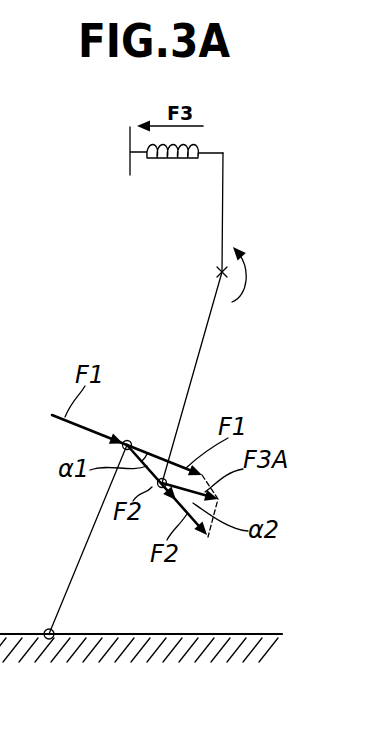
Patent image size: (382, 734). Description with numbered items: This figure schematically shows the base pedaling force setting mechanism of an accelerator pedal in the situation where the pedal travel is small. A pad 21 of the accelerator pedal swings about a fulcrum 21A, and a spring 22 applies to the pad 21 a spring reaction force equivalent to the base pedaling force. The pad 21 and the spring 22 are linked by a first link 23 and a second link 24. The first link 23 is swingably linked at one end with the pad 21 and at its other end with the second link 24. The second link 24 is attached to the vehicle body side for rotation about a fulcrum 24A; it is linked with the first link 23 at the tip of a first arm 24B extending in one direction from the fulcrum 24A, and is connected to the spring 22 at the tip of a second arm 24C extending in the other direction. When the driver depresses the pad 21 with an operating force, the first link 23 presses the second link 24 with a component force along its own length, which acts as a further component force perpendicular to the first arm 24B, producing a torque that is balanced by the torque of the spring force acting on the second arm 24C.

The pad 21 is at (80, 556).
The fulcrum 21A is at (52, 639).
The spring 22 is at (165, 161).
The first link 23 is at (158, 478).
The second link 24 is at (221, 318).
The fulcrum 24A is at (218, 273).
The first arm 24B is at (205, 340).
The second arm 24C is at (223, 177).